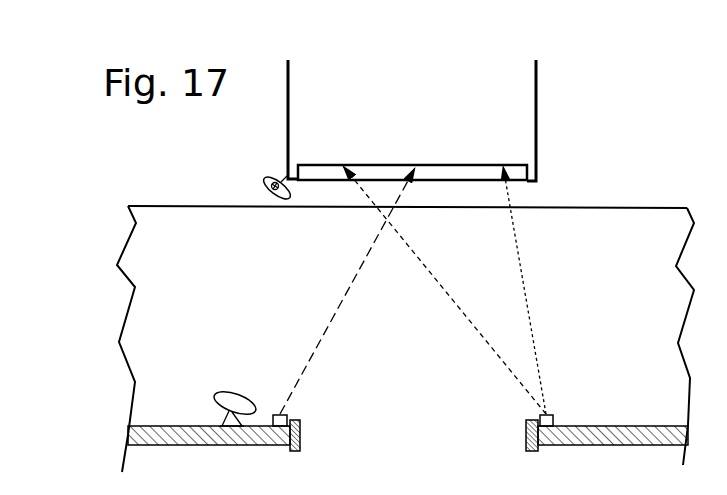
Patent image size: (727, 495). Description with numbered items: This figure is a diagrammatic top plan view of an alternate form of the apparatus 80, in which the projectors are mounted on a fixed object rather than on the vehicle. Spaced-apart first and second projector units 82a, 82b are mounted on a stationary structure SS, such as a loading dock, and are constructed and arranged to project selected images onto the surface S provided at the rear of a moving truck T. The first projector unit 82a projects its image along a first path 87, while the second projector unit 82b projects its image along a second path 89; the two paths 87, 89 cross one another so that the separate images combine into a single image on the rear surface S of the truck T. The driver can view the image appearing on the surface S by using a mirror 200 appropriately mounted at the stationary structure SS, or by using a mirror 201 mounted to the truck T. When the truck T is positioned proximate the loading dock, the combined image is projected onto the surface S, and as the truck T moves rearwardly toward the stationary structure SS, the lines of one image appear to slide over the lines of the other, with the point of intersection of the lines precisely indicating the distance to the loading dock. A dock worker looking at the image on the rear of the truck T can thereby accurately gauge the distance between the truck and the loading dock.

The apparatus 80 is at (108, 246).
The stationary structure SS is at (199, 260).
The truck T is at (528, 108).
The surface S is at (453, 173).
The mirror 201 is at (268, 180).
The mirror 200 is at (228, 398).
The first projector unit 82a is at (552, 422).
The second projector unit 82b is at (278, 413).
The second path 89 is at (342, 302).
The first path 87 is at (523, 298).